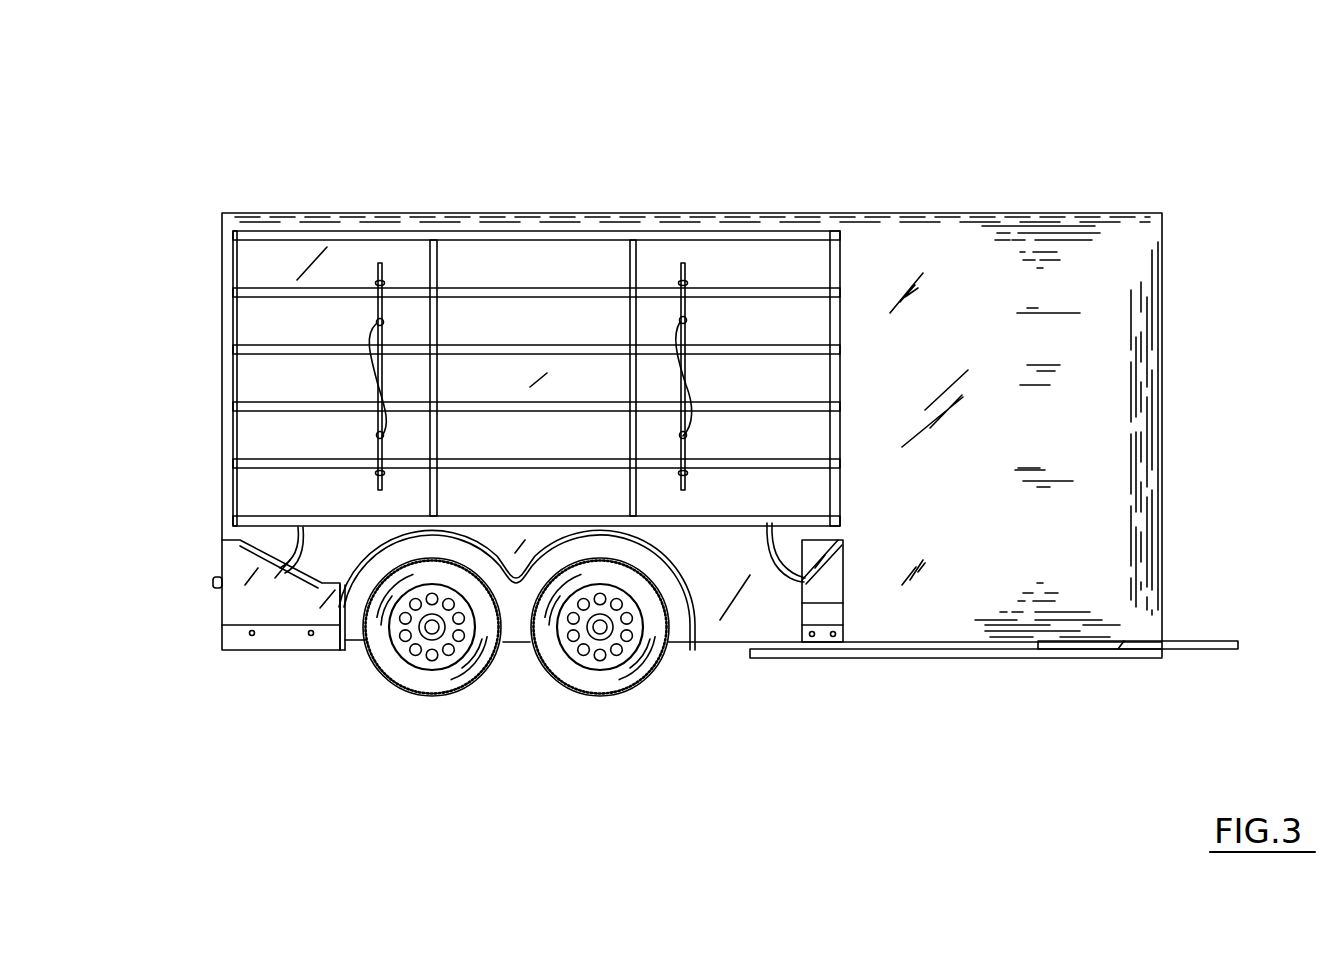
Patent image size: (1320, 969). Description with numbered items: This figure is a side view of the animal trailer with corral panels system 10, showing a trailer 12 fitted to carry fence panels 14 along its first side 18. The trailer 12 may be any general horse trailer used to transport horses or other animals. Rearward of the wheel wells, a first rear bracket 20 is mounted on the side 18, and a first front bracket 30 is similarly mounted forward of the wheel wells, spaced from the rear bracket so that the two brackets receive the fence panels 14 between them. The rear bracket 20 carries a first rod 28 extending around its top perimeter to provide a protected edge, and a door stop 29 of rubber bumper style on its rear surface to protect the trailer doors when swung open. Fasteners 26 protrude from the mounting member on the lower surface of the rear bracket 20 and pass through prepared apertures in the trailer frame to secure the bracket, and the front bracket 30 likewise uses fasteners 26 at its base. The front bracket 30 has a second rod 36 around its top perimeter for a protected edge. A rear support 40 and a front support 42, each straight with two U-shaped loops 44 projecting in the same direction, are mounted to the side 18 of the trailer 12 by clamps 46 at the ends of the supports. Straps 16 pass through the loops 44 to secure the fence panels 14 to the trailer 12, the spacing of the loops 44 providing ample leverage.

The animal trailer with corral panels system 10 is at (938, 188).
The trailer 12 is at (1117, 267).
The fence panels 14 is at (553, 288).
The straps 16 is at (373, 320).
The first side 18 is at (1045, 433).
The first rear bracket 20 is at (240, 609).
The fasteners 26 is at (252, 636).
The first rod 28 is at (337, 615).
The door stop 29 is at (213, 583).
The first front bracket 30 is at (842, 594).
The second rod 36 is at (845, 557).
The rear support 40 is at (380, 265).
The front support 42 is at (683, 263).
The U-shaped loops 44 is at (380, 432).
The clamps 46 is at (377, 472).